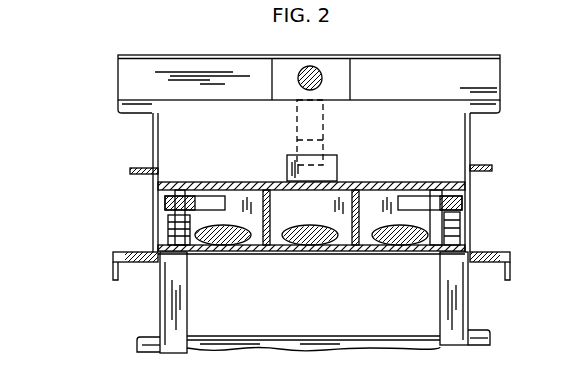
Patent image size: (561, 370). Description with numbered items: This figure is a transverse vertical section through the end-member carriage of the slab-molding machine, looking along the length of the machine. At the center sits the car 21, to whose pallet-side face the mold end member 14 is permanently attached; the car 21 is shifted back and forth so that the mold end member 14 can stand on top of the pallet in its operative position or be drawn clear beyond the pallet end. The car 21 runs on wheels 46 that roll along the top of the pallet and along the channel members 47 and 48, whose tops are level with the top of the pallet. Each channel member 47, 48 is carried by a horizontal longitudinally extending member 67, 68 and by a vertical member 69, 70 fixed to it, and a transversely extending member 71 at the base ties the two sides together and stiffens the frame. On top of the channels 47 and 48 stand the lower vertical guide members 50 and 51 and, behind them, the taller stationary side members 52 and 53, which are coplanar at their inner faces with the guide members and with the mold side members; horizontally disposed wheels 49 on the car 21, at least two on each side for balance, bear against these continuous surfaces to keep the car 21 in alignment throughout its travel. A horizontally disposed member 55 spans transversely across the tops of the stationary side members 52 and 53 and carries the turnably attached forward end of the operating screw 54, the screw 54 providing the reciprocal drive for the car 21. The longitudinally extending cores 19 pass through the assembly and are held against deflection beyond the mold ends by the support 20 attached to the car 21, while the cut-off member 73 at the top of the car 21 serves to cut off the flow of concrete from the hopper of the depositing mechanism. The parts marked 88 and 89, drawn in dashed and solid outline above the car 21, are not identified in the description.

The mold end member 14 is at (320, 251).
The longitudinally extending cores 19 is at (237, 242).
The support 20 is at (290, 251).
The car 21 is at (414, 182).
The wheels 46 is at (435, 250).
The channel member 47 is at (114, 270).
The channel member 48 is at (510, 270).
The horizontally disposed wheels 49 is at (160, 215).
The vertically disposed longitudinally extending member 50 is at (135, 173).
The vertically disposed longitudinally extending member 51 is at (490, 170).
The stationary side member 52 is at (152, 136).
The stationary side member 53 is at (471, 132).
The operating screw 54 is at (300, 70).
The horizontally disposed member 55 is at (437, 72).
The longitudinally extending member 67 is at (158, 303).
The longitudinally extending member 68 is at (470, 308).
The vertical member 69 is at (187, 312).
The vertical member 70 is at (440, 310).
The transversely extending member 71 is at (312, 335).
The cut-off member 73 is at (195, 183).
The plunger 88 is at (323, 125).
The plunger head 89 is at (337, 165).